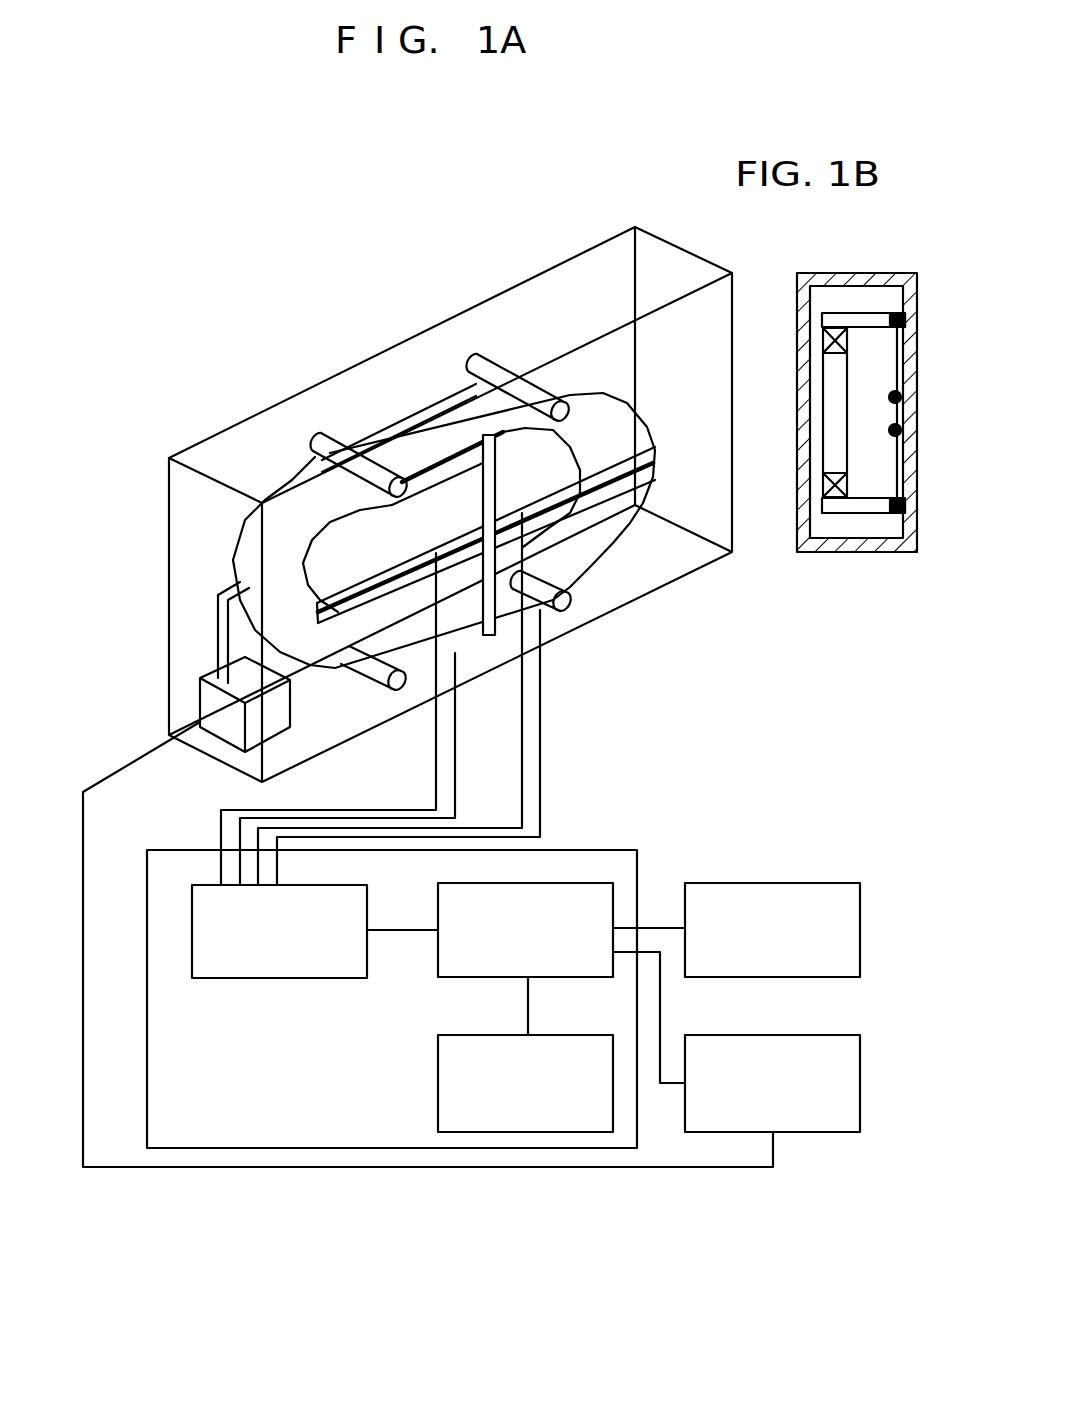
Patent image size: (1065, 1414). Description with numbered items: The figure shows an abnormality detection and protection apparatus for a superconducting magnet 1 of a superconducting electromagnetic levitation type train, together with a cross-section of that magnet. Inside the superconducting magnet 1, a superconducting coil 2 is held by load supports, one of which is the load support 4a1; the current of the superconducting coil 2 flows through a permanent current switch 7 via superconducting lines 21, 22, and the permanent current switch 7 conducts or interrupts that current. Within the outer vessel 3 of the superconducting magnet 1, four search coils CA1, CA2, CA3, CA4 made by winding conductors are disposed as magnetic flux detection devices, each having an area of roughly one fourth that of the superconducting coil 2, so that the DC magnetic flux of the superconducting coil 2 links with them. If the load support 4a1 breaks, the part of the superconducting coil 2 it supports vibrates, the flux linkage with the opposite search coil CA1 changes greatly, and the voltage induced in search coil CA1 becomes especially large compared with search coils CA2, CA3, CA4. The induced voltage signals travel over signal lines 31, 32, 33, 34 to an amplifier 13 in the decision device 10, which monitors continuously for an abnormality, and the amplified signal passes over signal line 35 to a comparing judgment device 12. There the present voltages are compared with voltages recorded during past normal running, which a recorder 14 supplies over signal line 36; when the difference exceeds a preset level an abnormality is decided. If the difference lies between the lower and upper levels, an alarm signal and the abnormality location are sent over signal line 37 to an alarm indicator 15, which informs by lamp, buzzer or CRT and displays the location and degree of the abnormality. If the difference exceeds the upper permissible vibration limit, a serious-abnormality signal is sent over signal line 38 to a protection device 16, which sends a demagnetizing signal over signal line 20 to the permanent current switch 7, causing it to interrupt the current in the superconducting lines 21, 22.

In FIG. 1A, the superconducting magnet 1 is at (552, 282).
In FIG. 1A, the superconducting coil 2 is at (303, 507).
In FIG. 1B, the superconducting coil 2 is at (833, 497).
In FIG. 1A, the outer vessel 3 is at (707, 563).
In FIG. 1B, the outer vessel 3 is at (795, 540).
In FIG. 1A, the load support 4a1 is at (317, 447).
In FIG. 1A, the search coil CA1 is at (353, 533).
In FIG. 1B, the search coil CA1 is at (890, 313).
In FIG. 1A, the search coil CA2 is at (653, 420).
In FIG. 1B, the search coil CA2 is at (893, 343).
In FIG. 1A, the search coil CA3 is at (350, 680).
In FIG. 1B, the search coil CA3 is at (895, 513).
In FIG. 1A, the search coil CA4 is at (610, 557).
In FIG. 1A, the permanent current switch 7 is at (203, 697).
In FIG. 1A, the decision device 10 is at (613, 847).
In FIG. 1A, the comparing judgment device 12 is at (437, 897).
In FIG. 1A, the amplifier 13 is at (208, 980).
In FIG. 1A, the recorder 14 is at (437, 1053).
In FIG. 1A, the alarm indicator 15 is at (833, 883).
In FIG. 1A, the protection device 16 is at (833, 1133).
In FIG. 1A, the signal line 20 is at (150, 753).
In FIG. 1A, the superconducting line 21 is at (220, 603).
In FIG. 1A, the superconducting line 22 is at (228, 637).
In FIG. 1A, the signal line 31 is at (438, 725).
In FIG. 1A, the signal line 32 is at (522, 777).
In FIG. 1A, the signal line 33 is at (457, 780).
In FIG. 1A, the signal line 34 is at (542, 715).
In FIG. 1A, the signal line 35 is at (403, 933).
In FIG. 1A, the signal line 36 is at (530, 1007).
In FIG. 1A, the signal line 37 is at (668, 927).
In FIG. 1A, the signal line 38 is at (663, 1008).